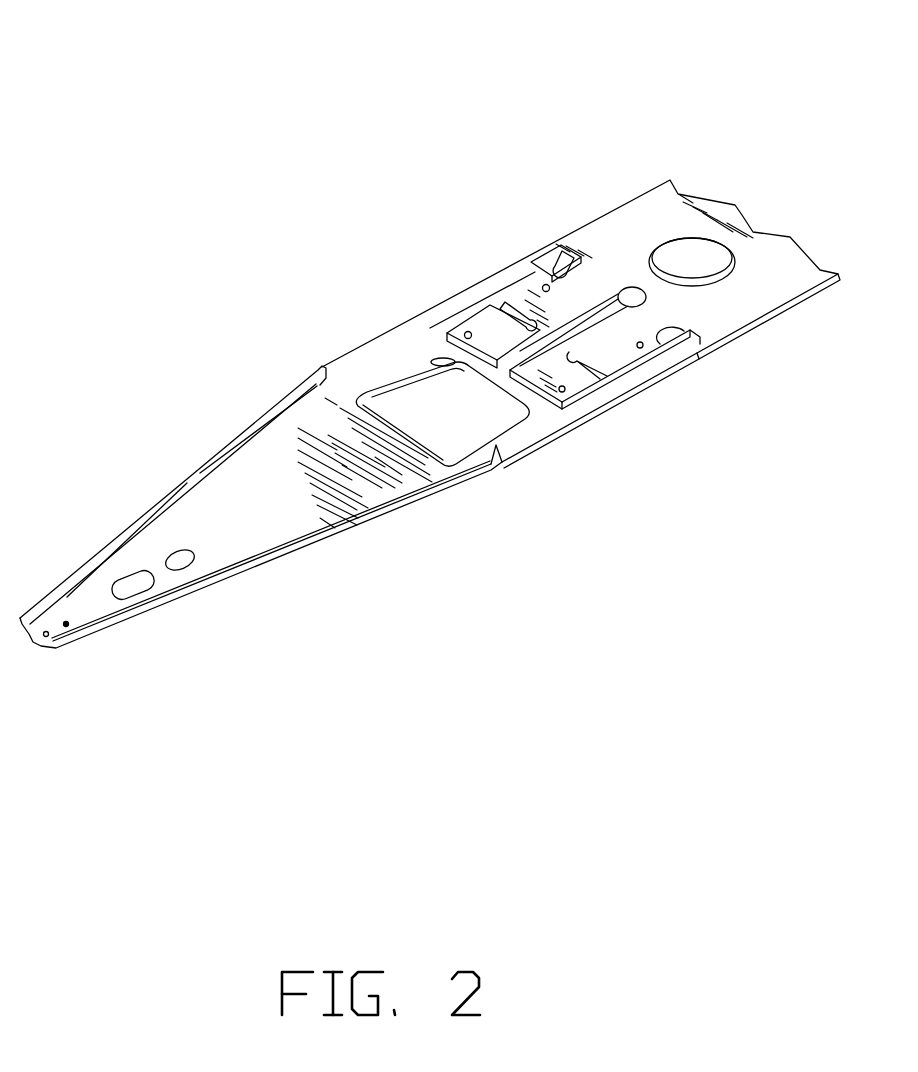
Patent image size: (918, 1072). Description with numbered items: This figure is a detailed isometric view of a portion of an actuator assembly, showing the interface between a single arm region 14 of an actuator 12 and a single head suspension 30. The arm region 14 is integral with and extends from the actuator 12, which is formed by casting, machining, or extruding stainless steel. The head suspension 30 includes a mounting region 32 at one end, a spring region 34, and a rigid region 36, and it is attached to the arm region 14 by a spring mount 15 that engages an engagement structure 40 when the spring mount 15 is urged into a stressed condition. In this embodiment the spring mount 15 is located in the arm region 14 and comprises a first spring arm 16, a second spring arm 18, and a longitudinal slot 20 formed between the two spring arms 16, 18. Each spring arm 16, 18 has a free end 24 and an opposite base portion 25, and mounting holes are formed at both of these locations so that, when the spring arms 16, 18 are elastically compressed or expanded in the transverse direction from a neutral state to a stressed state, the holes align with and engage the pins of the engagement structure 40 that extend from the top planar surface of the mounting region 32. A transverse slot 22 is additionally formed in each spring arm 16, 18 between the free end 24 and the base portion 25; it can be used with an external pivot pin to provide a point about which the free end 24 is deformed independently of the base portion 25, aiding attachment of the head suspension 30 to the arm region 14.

The actuator 12 is at (660, 193).
The arm region 14 is at (623, 227).
The spring mount 15 is at (677, 309).
The first spring arm 16 is at (516, 302).
The second spring arm 18 is at (622, 357).
The longitudinal slot 20 is at (518, 358).
The transverse slot 22 is at (491, 304).
The free end 24 is at (480, 346).
The base portion 25 is at (585, 300).
The head suspension 30 is at (199, 442).
The mounting region 32 is at (670, 350).
The spring region 34 is at (497, 448).
The rigid region 36 is at (213, 550).
The engagement structure 40 is at (655, 374).